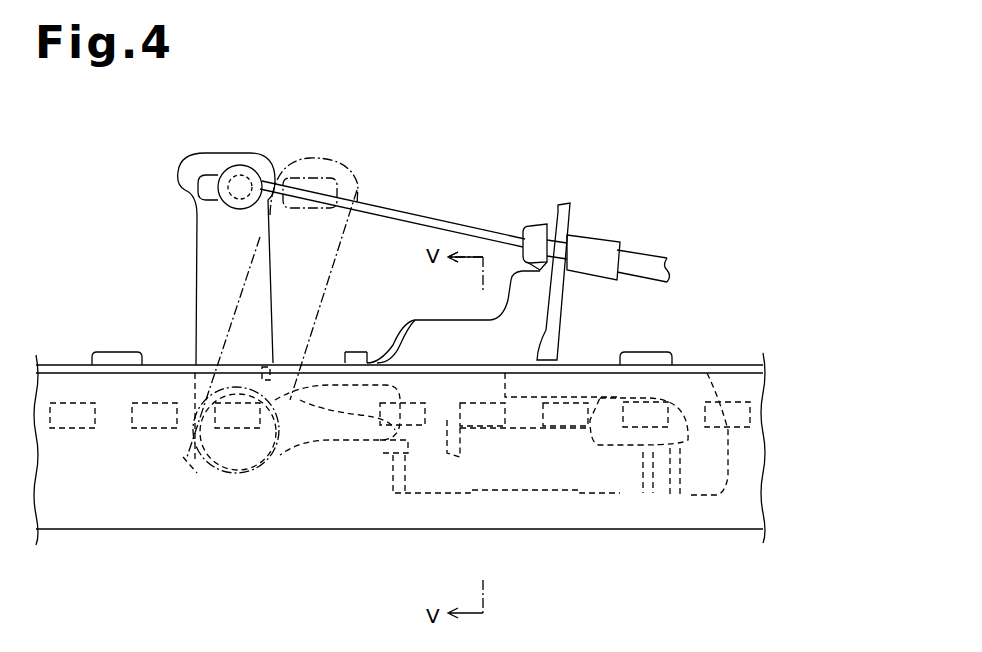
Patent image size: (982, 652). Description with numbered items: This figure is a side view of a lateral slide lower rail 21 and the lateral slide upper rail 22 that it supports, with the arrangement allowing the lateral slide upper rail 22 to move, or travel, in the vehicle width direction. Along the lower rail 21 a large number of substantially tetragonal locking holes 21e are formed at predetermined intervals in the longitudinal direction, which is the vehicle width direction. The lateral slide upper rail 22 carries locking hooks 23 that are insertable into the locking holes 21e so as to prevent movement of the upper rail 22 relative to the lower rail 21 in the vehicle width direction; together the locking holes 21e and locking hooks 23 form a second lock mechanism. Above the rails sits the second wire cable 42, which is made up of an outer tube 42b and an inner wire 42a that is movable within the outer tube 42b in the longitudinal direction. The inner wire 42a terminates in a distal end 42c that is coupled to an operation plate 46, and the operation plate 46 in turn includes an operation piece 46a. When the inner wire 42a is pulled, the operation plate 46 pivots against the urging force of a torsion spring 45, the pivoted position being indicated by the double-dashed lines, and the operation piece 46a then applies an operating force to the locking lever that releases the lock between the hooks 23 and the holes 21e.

The lateral slide lower rail 21 is at (107, 529).
The locking holes 21e is at (135, 448).
The lateral slide upper rail 22 is at (735, 365).
The locking hooks 23 is at (495, 427).
The second wire cable 42 is at (465, 267).
The inner wire 42a is at (424, 216).
The outer tube 42b is at (650, 257).
The distal end 42c is at (243, 165).
The torsion spring 45 is at (293, 363).
The operation plate 46 is at (251, 296).
The operation piece 46a is at (390, 397).